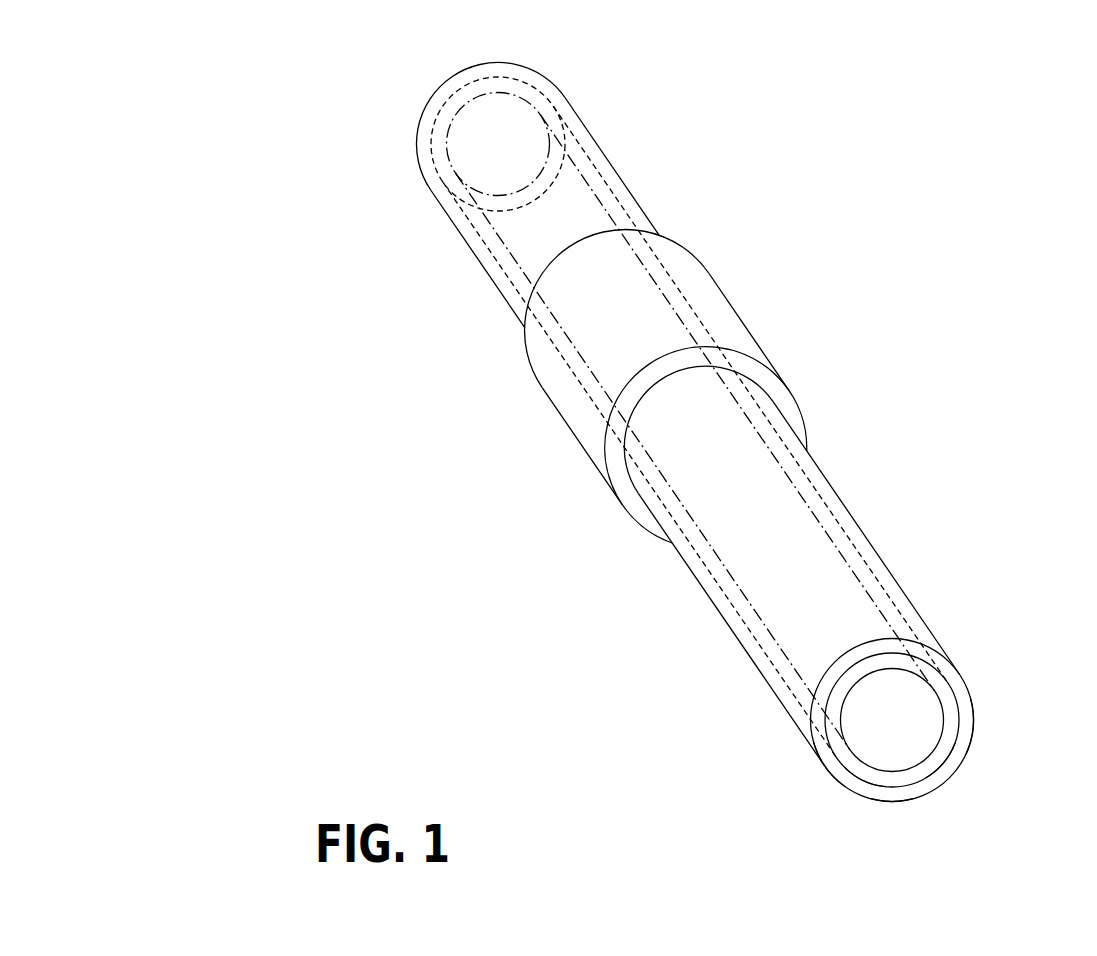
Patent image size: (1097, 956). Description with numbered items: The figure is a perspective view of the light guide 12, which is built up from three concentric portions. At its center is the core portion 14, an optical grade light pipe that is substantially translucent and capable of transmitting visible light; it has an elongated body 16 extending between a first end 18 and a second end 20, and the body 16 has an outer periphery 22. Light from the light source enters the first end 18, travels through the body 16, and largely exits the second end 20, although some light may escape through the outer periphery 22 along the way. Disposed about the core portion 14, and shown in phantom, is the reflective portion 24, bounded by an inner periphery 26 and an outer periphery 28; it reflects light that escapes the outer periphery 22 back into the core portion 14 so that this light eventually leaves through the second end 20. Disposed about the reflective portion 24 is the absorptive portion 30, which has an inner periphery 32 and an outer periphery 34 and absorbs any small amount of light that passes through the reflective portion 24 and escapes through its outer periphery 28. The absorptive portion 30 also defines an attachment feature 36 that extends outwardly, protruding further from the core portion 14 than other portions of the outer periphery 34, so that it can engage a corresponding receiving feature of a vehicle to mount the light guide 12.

The light guide 12 is at (838, 250).
The core portion 14 is at (905, 734).
The body 16 is at (767, 509).
The first end 18 is at (514, 139).
The second end 20 is at (871, 697).
The outer periphery 22 is at (940, 698).
The reflective portion 24 is at (942, 748).
The inner periphery 26 is at (923, 768).
The outer periphery 28 is at (962, 733).
The absorptive portion 30 is at (837, 768).
The inner periphery 32 is at (887, 792).
The outer periphery 34 is at (843, 788).
The attachment feature 36 is at (558, 394).